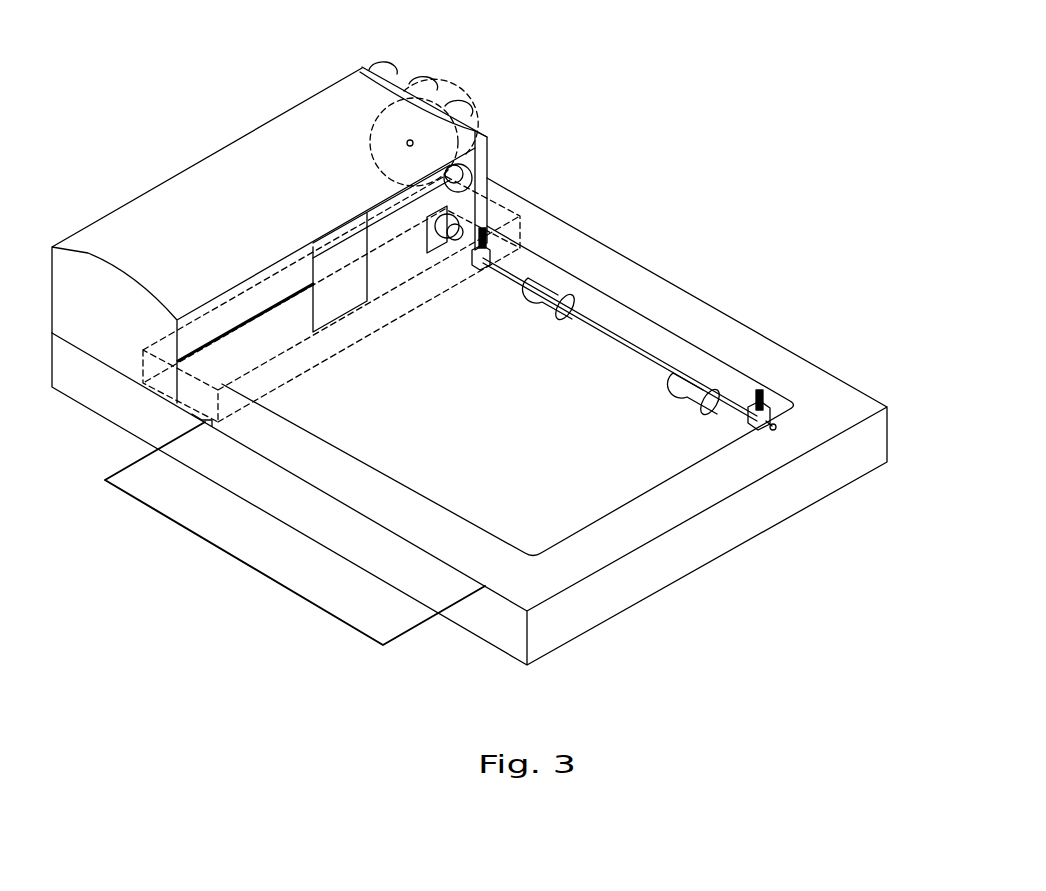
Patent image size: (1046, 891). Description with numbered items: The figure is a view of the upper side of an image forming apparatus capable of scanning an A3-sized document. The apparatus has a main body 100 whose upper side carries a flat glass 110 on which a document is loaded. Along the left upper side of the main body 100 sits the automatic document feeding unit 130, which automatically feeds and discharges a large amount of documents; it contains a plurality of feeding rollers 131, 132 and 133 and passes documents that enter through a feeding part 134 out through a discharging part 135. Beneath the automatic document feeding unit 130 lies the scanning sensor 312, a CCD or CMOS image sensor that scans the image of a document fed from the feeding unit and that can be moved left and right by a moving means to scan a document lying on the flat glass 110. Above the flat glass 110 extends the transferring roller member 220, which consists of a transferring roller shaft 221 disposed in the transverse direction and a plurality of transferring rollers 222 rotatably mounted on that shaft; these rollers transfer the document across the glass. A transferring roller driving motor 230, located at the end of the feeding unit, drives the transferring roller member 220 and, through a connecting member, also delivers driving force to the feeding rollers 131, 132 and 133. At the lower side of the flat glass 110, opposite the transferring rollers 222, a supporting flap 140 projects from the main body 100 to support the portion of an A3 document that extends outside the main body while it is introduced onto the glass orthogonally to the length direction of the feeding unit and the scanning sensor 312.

The main body 100 is at (485, 624).
The flat glass 110 is at (631, 484).
The automatic document feeding unit 130 is at (130, 207).
The feeding roller 131 is at (337, 248).
The feeding roller 132 is at (423, 73).
The feeding roller 133 is at (384, 60).
The feeding part 134 is at (177, 338).
The discharging part 135 is at (183, 387).
The supporting flap 140 is at (262, 553).
The transferring roller member 220 is at (624, 256).
The transferring roller shaft 221 is at (604, 325).
The transferring rollers 222 is at (549, 290).
The transferring roller driving motor 230 is at (448, 116).
The scanning sensor 312 is at (208, 421).